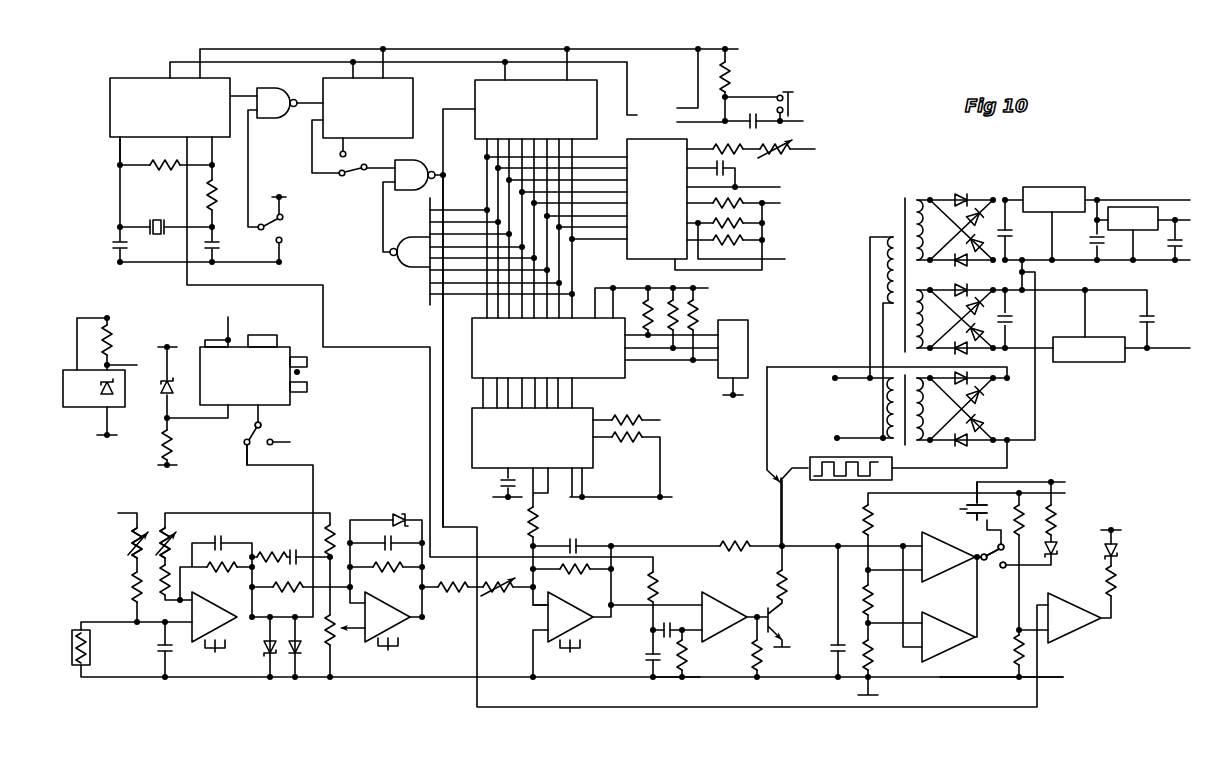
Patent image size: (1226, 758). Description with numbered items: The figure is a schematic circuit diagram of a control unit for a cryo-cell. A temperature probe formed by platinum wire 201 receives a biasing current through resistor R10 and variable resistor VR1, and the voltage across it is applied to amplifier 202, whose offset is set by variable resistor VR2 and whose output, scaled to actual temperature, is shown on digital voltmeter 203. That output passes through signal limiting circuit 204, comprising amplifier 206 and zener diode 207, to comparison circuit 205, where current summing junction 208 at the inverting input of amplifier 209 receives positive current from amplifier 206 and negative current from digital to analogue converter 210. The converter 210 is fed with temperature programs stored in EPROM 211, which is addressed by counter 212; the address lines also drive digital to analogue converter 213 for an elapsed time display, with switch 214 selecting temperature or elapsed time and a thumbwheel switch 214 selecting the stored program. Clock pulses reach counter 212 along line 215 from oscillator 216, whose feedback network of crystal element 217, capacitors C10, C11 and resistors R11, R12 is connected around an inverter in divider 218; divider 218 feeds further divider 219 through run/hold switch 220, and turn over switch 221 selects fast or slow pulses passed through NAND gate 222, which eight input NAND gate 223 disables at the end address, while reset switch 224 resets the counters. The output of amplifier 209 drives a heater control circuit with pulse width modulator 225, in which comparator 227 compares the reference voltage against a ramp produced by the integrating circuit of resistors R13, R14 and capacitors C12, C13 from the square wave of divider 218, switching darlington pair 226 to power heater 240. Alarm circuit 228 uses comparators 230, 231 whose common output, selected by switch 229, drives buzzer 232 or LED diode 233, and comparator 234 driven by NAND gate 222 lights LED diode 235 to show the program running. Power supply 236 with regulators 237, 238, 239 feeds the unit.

The platinum wire 201 is at (72, 632).
The amplifier 202 is at (200, 600).
The digital voltmeter 203 is at (273, 393).
The signal limiting circuit 204 is at (378, 662).
The comparison circuit 205 is at (523, 612).
The amplifier 206 is at (412, 622).
The zener diode 207 is at (396, 512).
The current summing junction 208 is at (528, 592).
The amplifier 209 is at (560, 596).
The digital to analogue converter 210 is at (577, 447).
The EPROM 211 is at (593, 362).
The counter 212 is at (487, 97).
The digital to analogue converter 213 is at (648, 243).
The turn over switch / thumbwheel switch 214 is at (748, 330).
The line 215 is at (463, 346).
The oscillator 216 is at (112, 218).
The crystal element 217 is at (158, 216).
The integrated circuit element / divider 218 is at (126, 103).
The divider 219 is at (337, 95).
The run/hold switch 220 is at (266, 232).
The turn over switch 221 is at (350, 176).
The NAND gate 222 is at (405, 188).
The 8 input NAND gate 223 is at (410, 268).
The reset switch 224 is at (784, 93).
The pulse width modulator 225 is at (676, 690).
The darlington pair 226 is at (773, 490).
The comparator 227 is at (743, 600).
The alarm circuit 228 is at (993, 688).
The switch 229 is at (988, 567).
The comparator 230 is at (932, 565).
The comparator 231 is at (948, 652).
The buzzer 232 is at (966, 509).
The LED diode 233 is at (1060, 548).
The comparator 234 is at (1080, 633).
The LED diode 235 is at (1120, 548).
The power supply 236 is at (971, 180).
The regulator 237 is at (1047, 187).
The regulator 238 is at (1127, 207).
The regulator 239 is at (1095, 362).
The heater 240 is at (848, 483).
The resistor R10 is at (151, 589).
The resistor R11 is at (164, 155).
The resistor R12 is at (228, 197).
The resistor R13 is at (668, 587).
The resistor R14 is at (699, 658).
The capacitor C10 is at (105, 249).
The capacitor C11 is at (228, 249).
The capacitor C12 is at (671, 643).
The capacitor C13 is at (639, 657).
The variable resistor VR1 is at (119, 543).
The variable resistor VR2 is at (188, 539).